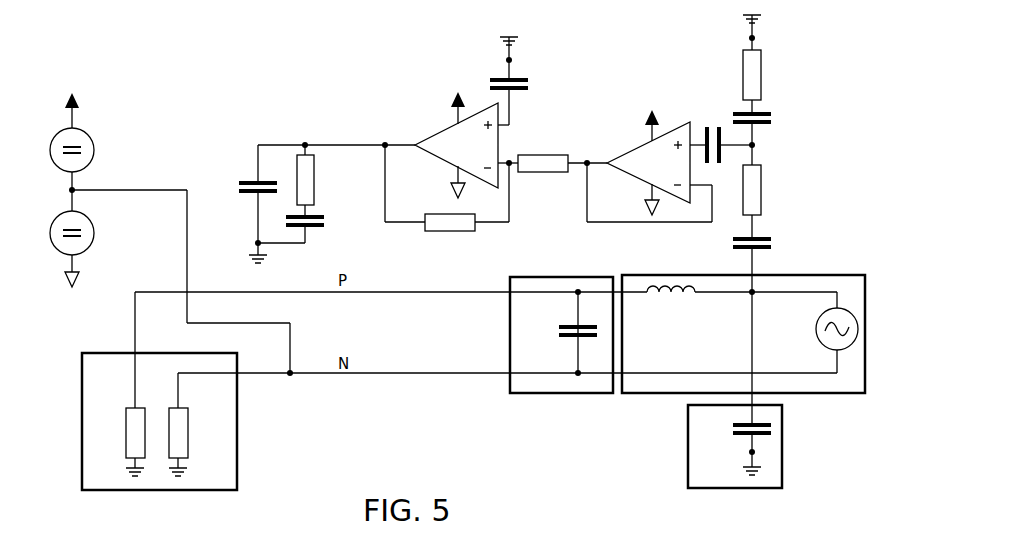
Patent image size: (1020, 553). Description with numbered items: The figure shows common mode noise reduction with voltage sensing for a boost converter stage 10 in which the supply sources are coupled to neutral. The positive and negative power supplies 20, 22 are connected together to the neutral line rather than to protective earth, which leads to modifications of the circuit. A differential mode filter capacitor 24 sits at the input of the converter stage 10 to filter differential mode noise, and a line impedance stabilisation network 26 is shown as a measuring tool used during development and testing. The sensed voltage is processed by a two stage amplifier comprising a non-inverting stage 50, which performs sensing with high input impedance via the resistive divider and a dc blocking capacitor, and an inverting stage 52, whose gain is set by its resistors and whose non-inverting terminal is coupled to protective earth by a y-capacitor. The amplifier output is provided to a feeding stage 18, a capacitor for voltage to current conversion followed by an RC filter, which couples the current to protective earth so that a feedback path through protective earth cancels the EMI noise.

The power converter stage 10 is at (806, 274).
The feeding stage 18 is at (278, 120).
The positive power supply 20 is at (94, 150).
The negative power supply 22 is at (94, 233).
The differential mode filter capacitor 24 is at (492, 393).
The line impedance stabilisation network 26 is at (240, 420).
The non-inverting stage 50 is at (797, 88).
The inverting stage 52 is at (557, 62).